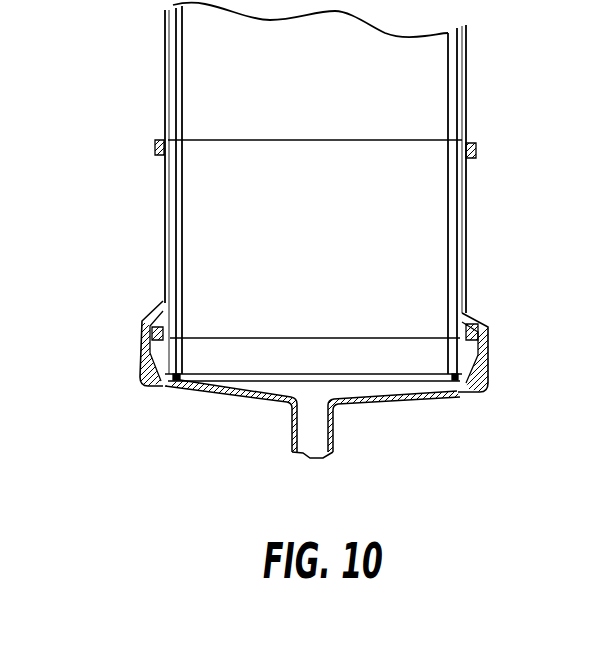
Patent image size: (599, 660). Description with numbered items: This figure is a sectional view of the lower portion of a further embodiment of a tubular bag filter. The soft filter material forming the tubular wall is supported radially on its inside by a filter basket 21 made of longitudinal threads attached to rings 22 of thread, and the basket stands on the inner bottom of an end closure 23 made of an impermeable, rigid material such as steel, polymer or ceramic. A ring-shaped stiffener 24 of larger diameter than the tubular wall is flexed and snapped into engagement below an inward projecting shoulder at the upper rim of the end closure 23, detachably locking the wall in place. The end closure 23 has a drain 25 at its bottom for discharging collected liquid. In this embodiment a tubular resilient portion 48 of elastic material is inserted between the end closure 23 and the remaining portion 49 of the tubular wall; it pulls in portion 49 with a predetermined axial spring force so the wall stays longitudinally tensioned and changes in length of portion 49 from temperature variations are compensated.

The filter basket 21 is at (450, 183).
The rings of thread 22 is at (233, 377).
The end closure 23 is at (145, 384).
The ring-shaped stiffener 24 is at (472, 335).
The drain 25 is at (318, 437).
The resilient portion 48 is at (190, 190).
The remaining portion of the tubular wall 49 is at (193, 60).